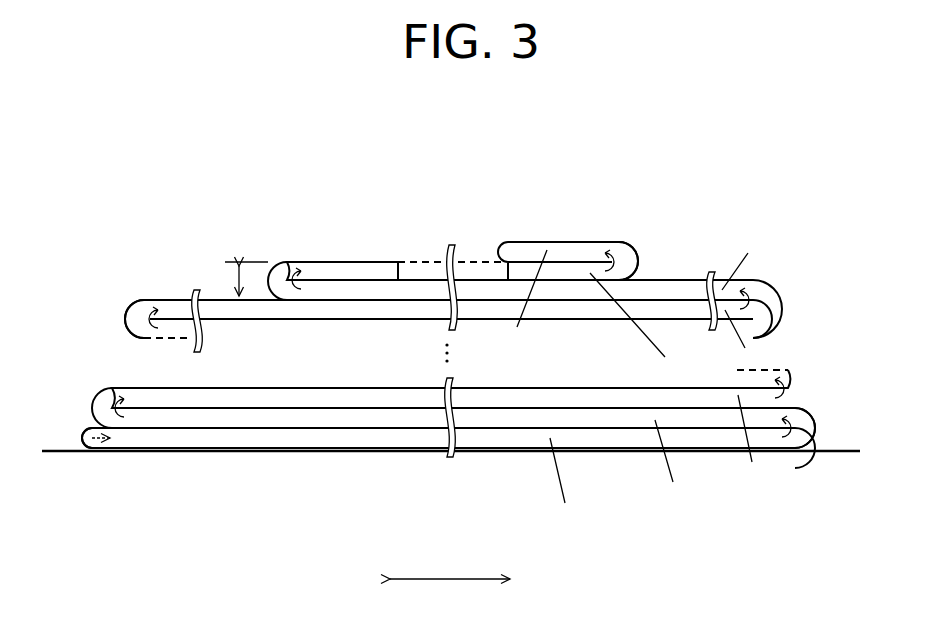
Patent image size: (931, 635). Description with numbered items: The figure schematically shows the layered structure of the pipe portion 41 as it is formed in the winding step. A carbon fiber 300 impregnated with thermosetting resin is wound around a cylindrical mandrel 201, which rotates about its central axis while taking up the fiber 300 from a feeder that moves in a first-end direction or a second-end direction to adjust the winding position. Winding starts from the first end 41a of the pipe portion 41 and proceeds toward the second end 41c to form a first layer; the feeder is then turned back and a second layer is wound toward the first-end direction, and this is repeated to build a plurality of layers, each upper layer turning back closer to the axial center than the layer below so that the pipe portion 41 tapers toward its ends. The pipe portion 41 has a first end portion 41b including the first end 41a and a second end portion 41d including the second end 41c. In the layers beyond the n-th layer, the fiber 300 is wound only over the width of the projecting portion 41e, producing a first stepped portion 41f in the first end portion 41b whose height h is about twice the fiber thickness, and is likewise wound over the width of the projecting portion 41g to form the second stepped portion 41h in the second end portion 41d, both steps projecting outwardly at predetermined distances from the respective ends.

The pipe portion 41 is at (550, 154).
The first end 41a is at (82, 457).
The first end portion 41b is at (154, 247).
The second end 41c is at (820, 457).
The second end portion 41d is at (709, 240).
The projecting portion 41e is at (400, 250).
The first stepped portion 41f is at (270, 246).
The projecting portion 41g is at (637, 237).
The second stepped portion 41h is at (639, 234).
The mandrel 201 is at (62, 449).
The carbon fiber 300 is at (90, 426).